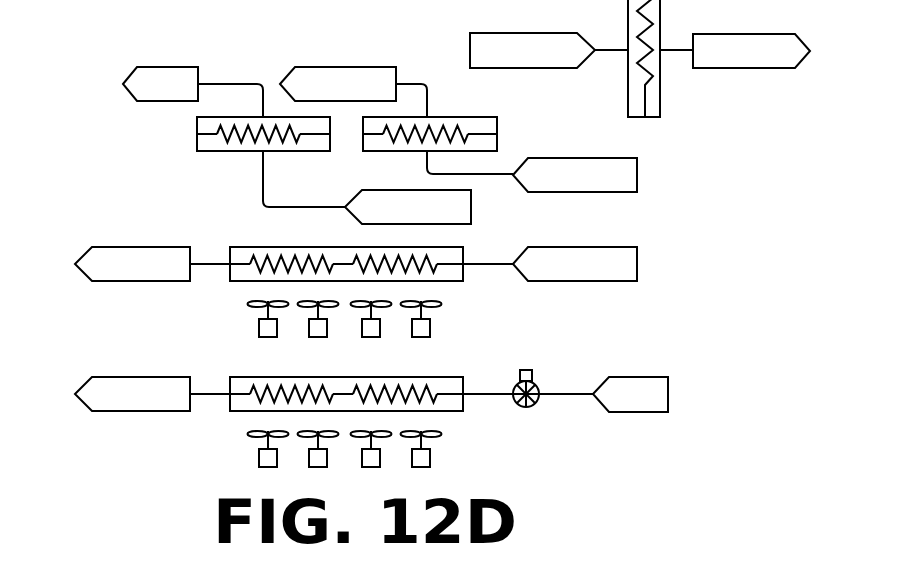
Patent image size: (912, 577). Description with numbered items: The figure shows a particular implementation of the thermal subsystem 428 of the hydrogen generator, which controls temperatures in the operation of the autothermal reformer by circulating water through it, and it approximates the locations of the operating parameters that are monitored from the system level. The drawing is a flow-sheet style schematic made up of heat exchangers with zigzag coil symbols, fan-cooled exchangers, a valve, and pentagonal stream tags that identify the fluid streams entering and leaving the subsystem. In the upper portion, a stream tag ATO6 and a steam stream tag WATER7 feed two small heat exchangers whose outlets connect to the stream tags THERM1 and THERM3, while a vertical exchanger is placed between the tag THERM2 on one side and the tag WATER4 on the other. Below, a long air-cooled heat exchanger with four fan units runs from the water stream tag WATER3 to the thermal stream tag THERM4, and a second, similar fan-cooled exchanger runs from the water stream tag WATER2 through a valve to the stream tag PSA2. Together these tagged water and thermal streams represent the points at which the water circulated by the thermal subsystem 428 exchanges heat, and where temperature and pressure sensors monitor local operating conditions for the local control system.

The thermal subsystem 428 is at (98, 42).
The anode tail gas oxidizer stream 6 tag ATO6 is at (193, 92).
The water stream 7 (steam) tag WATER7 is at (353, 92).
The thermal stream 1 tag THERM1 is at (367, 187).
The thermal stream 2 tag THERM2 is at (549, 50).
The thermal stream 3 tag THERM3 is at (532, 171).
The thermal stream 4 tag THERM4 is at (550, 264).
The water stream 4 tag WATER4 is at (735, 51).
The water stream 3 tag WATER3 is at (152, 264).
The water stream 2 tag WATER2 is at (152, 394).
The pressure swing adsorption stream 2 tag PSA2 is at (603, 394).